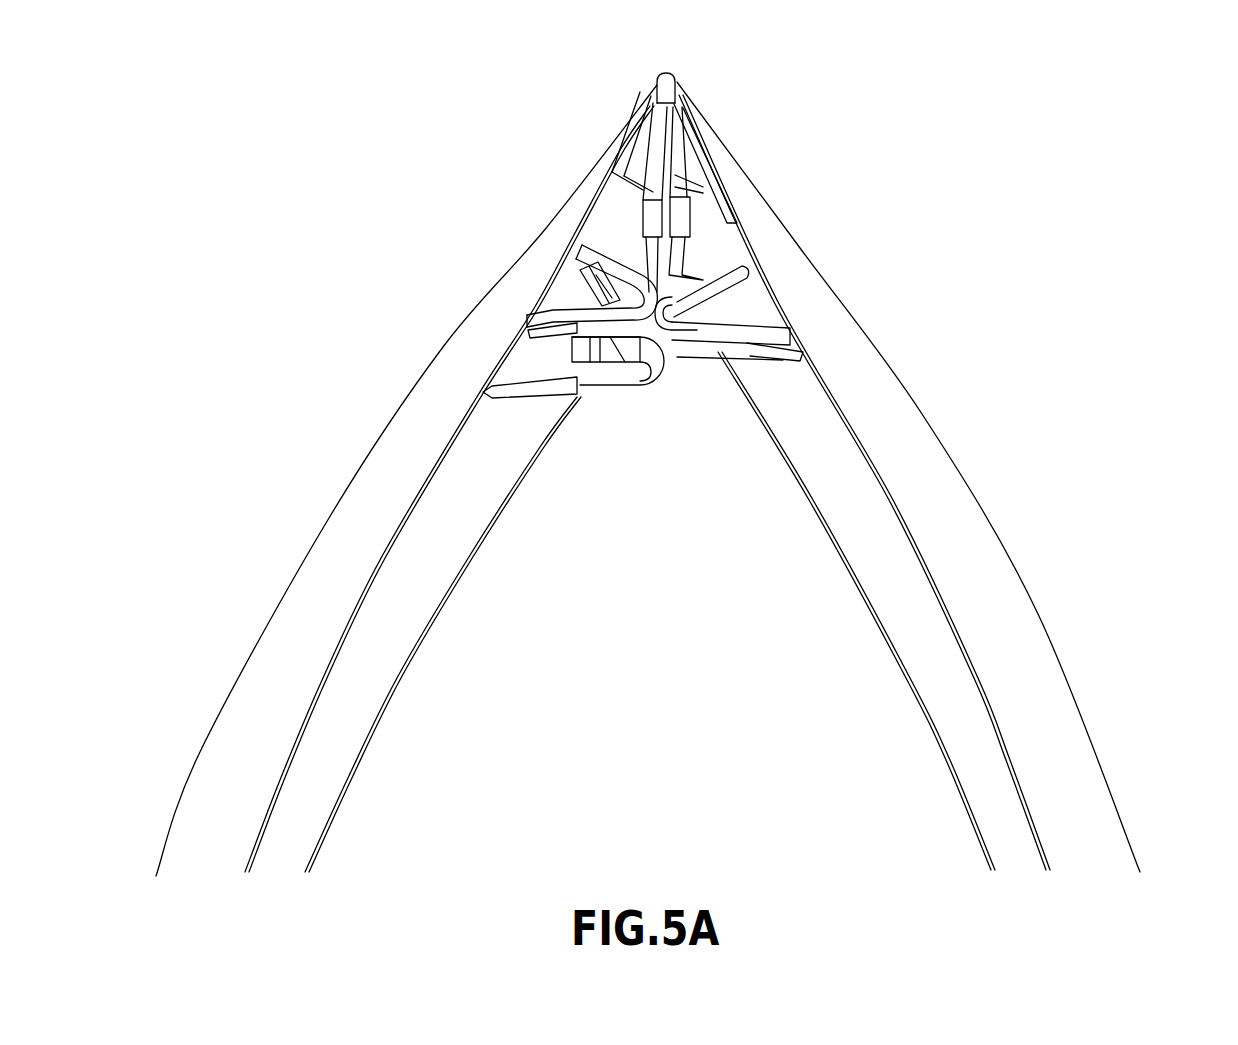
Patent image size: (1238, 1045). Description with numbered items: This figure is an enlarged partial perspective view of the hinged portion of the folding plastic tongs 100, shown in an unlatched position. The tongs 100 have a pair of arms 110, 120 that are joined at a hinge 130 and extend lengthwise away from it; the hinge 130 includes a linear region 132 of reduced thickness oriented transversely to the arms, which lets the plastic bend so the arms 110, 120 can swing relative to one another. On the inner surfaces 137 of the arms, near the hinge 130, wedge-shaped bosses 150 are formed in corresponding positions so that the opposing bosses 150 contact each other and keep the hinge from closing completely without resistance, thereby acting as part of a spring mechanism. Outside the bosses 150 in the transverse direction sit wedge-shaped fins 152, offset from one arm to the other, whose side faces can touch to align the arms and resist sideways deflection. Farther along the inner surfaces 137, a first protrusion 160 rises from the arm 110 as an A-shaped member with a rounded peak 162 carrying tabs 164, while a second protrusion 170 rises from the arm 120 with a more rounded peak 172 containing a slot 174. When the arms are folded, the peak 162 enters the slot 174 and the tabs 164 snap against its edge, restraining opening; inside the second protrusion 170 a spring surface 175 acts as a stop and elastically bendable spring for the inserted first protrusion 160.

The folding plastic tongs 100 is at (1113, 82).
The arm 110 is at (922, 414).
The arm 120 is at (329, 518).
The hinge 130 is at (678, 83).
The linear region 132 is at (668, 73).
The inner surface 137 is at (368, 691).
The wedge-shaped boss 150 is at (655, 207).
The wedge-shaped fin 152 is at (643, 152).
The first protrusion 160 is at (719, 350).
The peak 162 is at (660, 340).
The tab 164 is at (690, 318).
The second protrusion 170 is at (617, 387).
The peak 172 is at (647, 387).
The slot 174 is at (595, 393).
The spring surface 175 is at (583, 290).